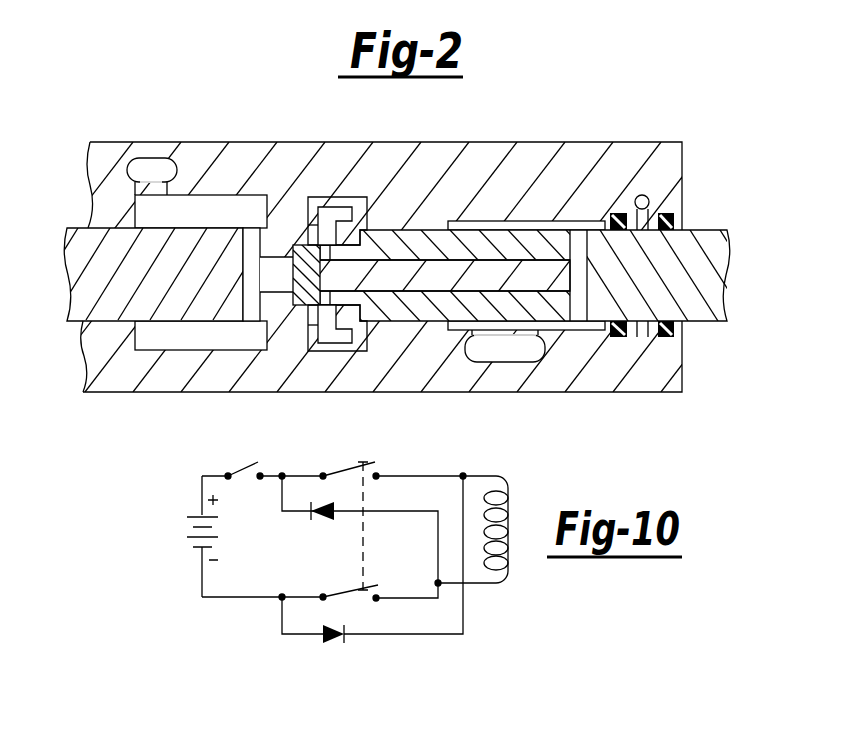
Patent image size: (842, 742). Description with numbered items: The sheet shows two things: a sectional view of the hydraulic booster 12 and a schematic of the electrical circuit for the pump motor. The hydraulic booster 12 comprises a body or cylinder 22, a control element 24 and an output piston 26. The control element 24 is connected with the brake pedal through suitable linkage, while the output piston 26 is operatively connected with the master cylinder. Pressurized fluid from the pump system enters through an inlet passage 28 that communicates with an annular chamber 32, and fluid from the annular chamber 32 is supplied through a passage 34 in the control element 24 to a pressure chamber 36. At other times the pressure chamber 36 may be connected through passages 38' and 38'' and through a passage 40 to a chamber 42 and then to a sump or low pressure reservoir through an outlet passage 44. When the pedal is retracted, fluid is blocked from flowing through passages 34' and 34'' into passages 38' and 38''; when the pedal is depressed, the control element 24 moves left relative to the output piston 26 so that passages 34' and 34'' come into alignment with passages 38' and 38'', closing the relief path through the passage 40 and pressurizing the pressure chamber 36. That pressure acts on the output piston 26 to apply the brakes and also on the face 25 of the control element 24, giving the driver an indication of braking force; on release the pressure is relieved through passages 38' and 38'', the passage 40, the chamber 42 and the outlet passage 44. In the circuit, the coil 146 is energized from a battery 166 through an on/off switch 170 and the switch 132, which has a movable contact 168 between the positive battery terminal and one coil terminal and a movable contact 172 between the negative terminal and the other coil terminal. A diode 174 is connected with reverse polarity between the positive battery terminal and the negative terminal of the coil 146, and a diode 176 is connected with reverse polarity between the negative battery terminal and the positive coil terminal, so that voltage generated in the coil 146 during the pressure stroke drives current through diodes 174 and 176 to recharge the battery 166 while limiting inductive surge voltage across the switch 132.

In FIG. 2, the hydraulic booster 12 is at (521, 135).
In FIG. 2, the body or cylinder 22 is at (395, 140).
In FIG. 2, the control element 24 is at (704, 229).
In FIG. 2, the face 25 is at (355, 310).
In FIG. 2, the output piston 26 is at (74, 220).
In FIG. 2, the inlet passage 28 is at (500, 357).
In FIG. 2, the annular chamber 32 is at (527, 222).
In FIG. 2, the passage 34 is at (379, 324).
In FIG. 2, the passage 34' is at (445, 272).
In FIG. 2, the passage 34'' is at (445, 280).
In FIG. 2, the pressure chamber 36 is at (366, 207).
In FIG. 2, the passage 38' is at (349, 171).
In FIG. 2, the passage 38'' is at (282, 367).
In FIG. 2, the passage 40 is at (262, 292).
In FIG. 2, the chamber 42 is at (193, 200).
In FIG. 2, the outlet passage 44 is at (143, 163).
In FIG. 10, the switch 132 is at (387, 465).
In FIG. 10, the coil 146 is at (508, 505).
In FIG. 10, the battery 166 is at (195, 512).
In FIG. 10, the movable contact 168 is at (342, 465).
In FIG. 10, the on/off switch 170 is at (247, 465).
In FIG. 10, the movable contact 172 is at (343, 590).
In FIG. 10, the diode 174 is at (313, 521).
In FIG. 10, the diode 176 is at (333, 643).